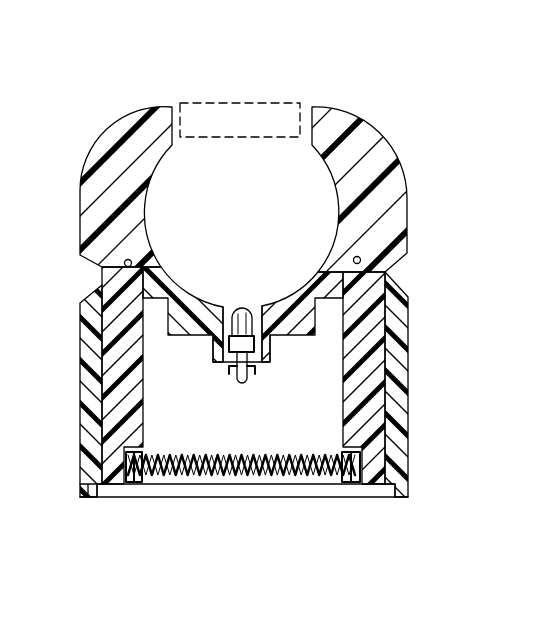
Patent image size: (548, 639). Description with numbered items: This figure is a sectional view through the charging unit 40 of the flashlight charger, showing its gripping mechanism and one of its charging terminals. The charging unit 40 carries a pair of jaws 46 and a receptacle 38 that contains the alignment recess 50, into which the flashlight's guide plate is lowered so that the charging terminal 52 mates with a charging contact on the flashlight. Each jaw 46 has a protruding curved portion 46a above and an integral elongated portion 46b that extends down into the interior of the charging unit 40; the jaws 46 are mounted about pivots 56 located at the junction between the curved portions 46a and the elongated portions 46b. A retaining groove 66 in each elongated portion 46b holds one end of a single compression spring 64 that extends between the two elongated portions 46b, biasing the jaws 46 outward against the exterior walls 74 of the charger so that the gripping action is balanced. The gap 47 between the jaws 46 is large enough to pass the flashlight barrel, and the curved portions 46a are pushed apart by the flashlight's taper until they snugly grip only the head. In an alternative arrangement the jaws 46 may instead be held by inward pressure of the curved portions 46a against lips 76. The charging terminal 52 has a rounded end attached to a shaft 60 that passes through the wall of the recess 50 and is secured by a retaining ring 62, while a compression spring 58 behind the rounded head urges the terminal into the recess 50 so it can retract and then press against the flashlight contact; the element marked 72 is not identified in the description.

The receptacle 38 is at (251, 62).
The charging unit 40 is at (66, 366).
The jaws 46 is at (160, 108).
The protruding curved portion 46a is at (170, 182).
The elongated portion 46b is at (157, 369).
The gap 47 is at (254, 134).
The alignment recess 50 is at (227, 286).
The charging terminal 52 is at (242, 308).
The pivots 56 is at (131, 261).
The compression spring 58 is at (268, 346).
The shaft 60 is at (243, 383).
The retaining ring 62 is at (249, 371).
The compression spring 64 is at (281, 480).
The retaining groove 66 is at (244, 497).
The end cap 72 is at (98, 513).
The exterior walls 74 is at (88, 404).
The lips 76 is at (224, 298).